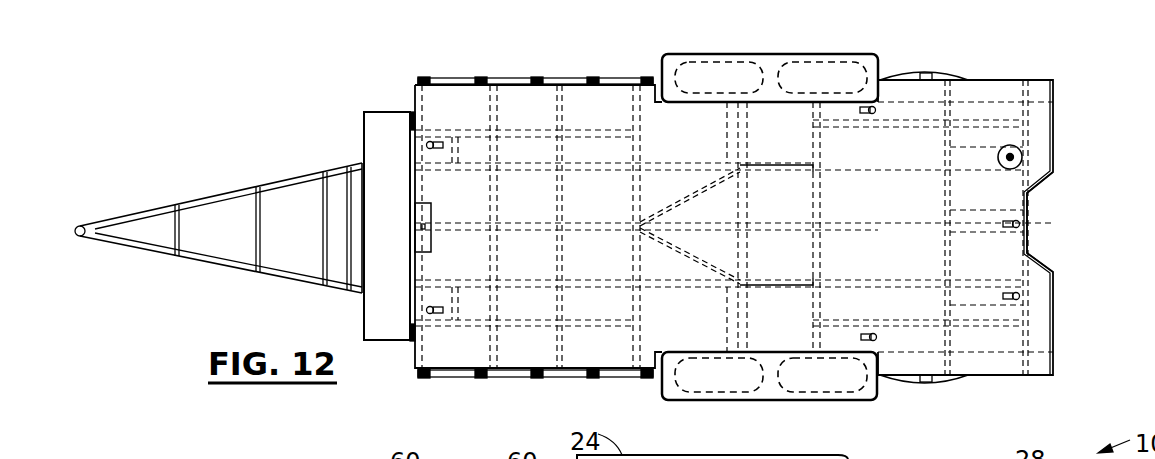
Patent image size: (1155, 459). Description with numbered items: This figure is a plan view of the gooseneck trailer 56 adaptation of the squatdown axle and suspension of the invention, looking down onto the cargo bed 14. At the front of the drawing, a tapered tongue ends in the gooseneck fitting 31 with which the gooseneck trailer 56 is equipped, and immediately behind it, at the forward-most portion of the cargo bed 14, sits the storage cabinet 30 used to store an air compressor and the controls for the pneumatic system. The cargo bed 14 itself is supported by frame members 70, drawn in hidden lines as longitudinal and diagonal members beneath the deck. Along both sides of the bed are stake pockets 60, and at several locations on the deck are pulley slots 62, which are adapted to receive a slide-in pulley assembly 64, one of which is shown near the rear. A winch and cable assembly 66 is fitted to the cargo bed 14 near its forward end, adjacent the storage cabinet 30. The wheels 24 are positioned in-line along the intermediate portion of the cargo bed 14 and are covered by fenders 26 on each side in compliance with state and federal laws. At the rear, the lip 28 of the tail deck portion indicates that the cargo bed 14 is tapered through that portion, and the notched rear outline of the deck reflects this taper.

The cargo bed 14 is at (1003, 377).
The wheels 24 is at (733, 58).
The fenders 26 is at (683, 54).
The lip 28 is at (1055, 143).
The storage cabinet 30 is at (385, 112).
The gooseneck fitting 31 is at (82, 237).
The gooseneck trailer 56 is at (1040, 58).
The stake pockets 60 is at (423, 78).
The pulley slots 62 is at (430, 141).
The slide-in pulley assembly 64 is at (1023, 157).
The winch and cable assembly 66 is at (431, 232).
The frame members 70 is at (565, 242).